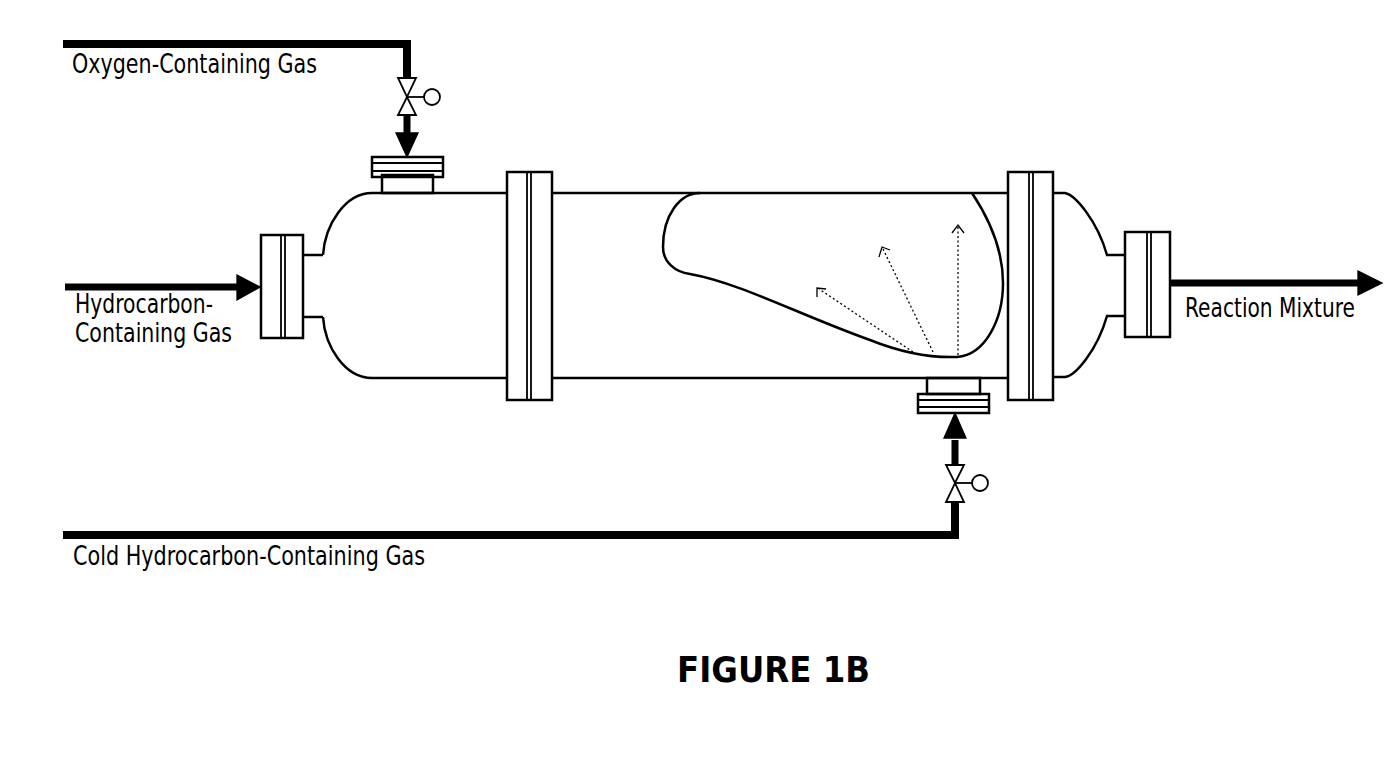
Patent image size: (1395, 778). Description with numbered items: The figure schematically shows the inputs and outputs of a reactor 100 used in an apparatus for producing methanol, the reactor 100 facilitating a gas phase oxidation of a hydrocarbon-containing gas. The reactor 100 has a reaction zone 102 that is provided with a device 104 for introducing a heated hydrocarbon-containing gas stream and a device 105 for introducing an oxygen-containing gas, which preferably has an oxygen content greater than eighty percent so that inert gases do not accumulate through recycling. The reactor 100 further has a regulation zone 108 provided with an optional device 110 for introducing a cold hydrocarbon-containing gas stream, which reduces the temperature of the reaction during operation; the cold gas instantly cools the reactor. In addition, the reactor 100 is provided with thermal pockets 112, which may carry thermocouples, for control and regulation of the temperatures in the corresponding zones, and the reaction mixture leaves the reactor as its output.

The reactor 100 is at (861, 264).
The reaction zone 102 is at (437, 286).
The device for introducing a heated hydrocarbon-containing gas stream 104 is at (238, 325).
The device for introducing an oxygen-containing gas 105 is at (371, 184).
The regulation zone 108 is at (833, 275).
The device for introducing a cold hydrocarbon-containing gas stream 110 is at (927, 437).
The thermal pockets 112 is at (780, 350).